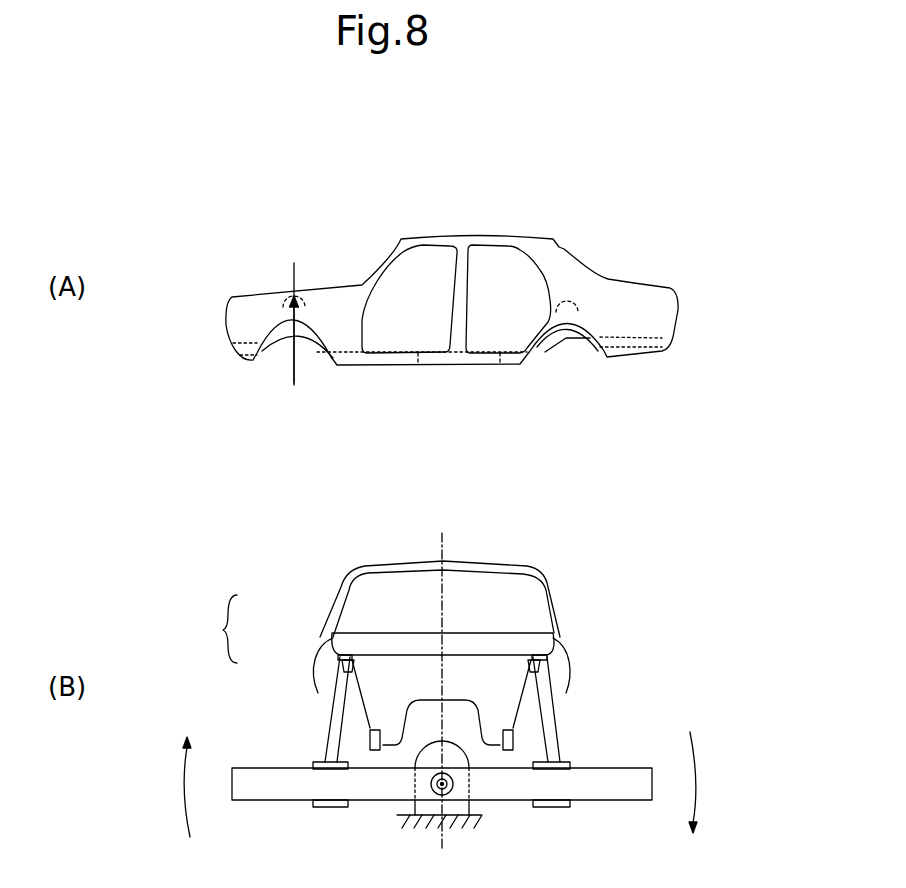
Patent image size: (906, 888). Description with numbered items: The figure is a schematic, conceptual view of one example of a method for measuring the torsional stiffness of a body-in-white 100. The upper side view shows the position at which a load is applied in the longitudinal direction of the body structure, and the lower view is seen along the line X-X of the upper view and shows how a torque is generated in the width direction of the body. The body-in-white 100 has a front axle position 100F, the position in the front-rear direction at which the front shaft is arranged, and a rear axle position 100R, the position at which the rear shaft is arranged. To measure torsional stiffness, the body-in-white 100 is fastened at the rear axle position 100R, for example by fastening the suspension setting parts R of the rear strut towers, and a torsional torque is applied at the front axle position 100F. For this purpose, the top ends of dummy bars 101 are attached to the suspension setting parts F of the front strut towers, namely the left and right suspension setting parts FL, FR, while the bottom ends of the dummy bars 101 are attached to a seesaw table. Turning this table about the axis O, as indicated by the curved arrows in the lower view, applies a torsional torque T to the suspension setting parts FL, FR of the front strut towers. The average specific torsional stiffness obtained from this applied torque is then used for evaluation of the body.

The body-in-white 100 is at (495, 236).
The front axle position 100F is at (302, 288).
The rear axle position 100R is at (570, 242).
The dummy bars 101 is at (333, 730).
The suspension setting parts of the front strut towers F is at (298, 305).
The suspension setting part of the front left strut tower FL is at (527, 670).
The suspension setting part of the front right strut tower FR is at (336, 651).
The suspension setting parts of the rear strut towers R is at (582, 310).
The axis O is at (447, 792).
The torsional torque T is at (183, 785).
The line X- X is at (283, 265).